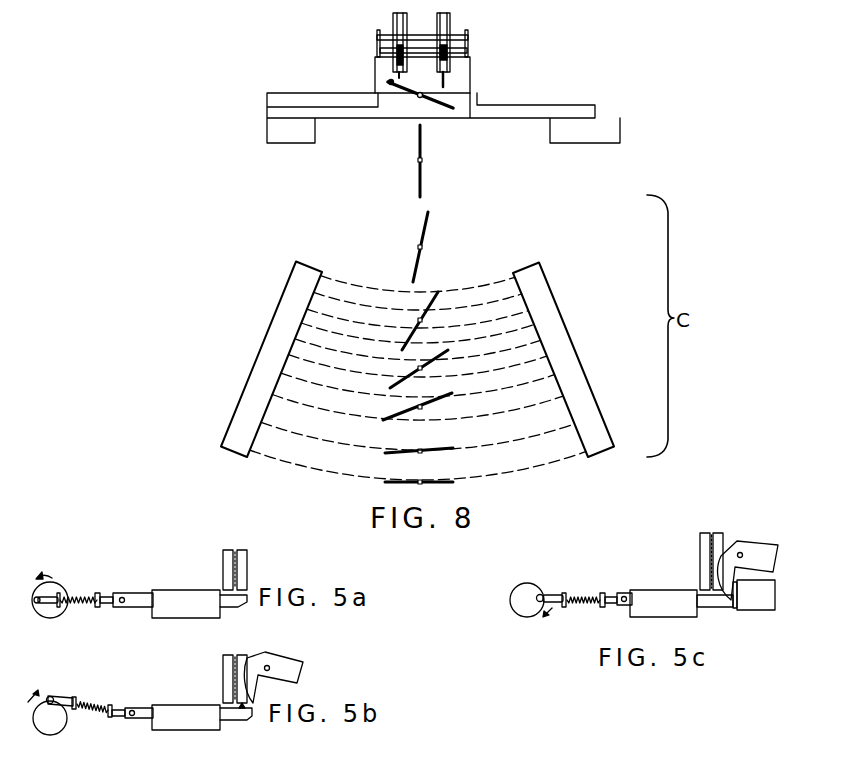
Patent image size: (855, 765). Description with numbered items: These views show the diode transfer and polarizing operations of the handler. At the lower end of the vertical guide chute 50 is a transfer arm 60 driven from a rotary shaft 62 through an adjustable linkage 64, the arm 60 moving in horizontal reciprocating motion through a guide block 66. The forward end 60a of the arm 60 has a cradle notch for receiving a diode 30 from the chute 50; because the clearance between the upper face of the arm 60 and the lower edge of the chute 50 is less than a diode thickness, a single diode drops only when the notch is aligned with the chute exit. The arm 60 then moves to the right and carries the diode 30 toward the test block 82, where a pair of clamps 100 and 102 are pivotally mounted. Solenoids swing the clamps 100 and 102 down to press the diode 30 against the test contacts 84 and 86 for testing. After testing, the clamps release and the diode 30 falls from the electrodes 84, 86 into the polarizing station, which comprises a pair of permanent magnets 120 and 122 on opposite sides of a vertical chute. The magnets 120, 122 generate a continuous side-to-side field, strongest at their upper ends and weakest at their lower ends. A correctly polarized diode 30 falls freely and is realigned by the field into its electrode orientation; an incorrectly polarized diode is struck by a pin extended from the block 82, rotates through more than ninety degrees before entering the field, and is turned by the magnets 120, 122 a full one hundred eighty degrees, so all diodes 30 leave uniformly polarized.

In FIG. 8, the diode 30 is at (452, 109).
In FIG. 8, the test contact 84 is at (447, 83).
In FIG. 8, the test contact 86 is at (388, 78).
In FIG. 8, the clamp 100 is at (450, 61).
In FIG. 8, the clamp 102 is at (395, 66).
In FIG. 5B, the clamp 102 is at (303, 678).
In FIG. 5C, the clamp 102 is at (757, 553).
In FIG. 8, the permanent magnet 120 is at (550, 315).
In FIG. 8, the permanent magnet 122 is at (243, 392).
In FIG. 5A, the vertical guide chute 50 is at (252, 571).
In FIG. 5B, the vertical guide chute 50 is at (215, 667).
In FIG. 5C, the vertical guide chute 50 is at (693, 560).
In FIG. 5A, the transfer arm 60 is at (134, 594).
In FIG. 5B, the transfer arm 60 is at (143, 710).
In FIG. 5C, the transfer arm 60 is at (625, 593).
In FIG. 5A, the forward end 60a is at (227, 607).
In FIG. 5B, the forward end 60a is at (233, 720).
In FIG. 5A, the rotary shaft 62 is at (57, 583).
In FIG. 5B, the rotary shaft 62 is at (55, 722).
In FIG. 5C, the rotary shaft 62 is at (537, 570).
In FIG. 5A, the adjustable linkage 64 is at (86, 597).
In FIG. 5B, the adjustable linkage 64 is at (98, 705).
In FIG. 5C, the adjustable linkage 64 is at (600, 578).
In FIG. 5A, the guide block 66 is at (203, 576).
In FIG. 5B, the guide block 66 is at (187, 718).
In FIG. 5C, the guide block 66 is at (683, 607).
In FIG. 5C, the test block 82 is at (757, 592).